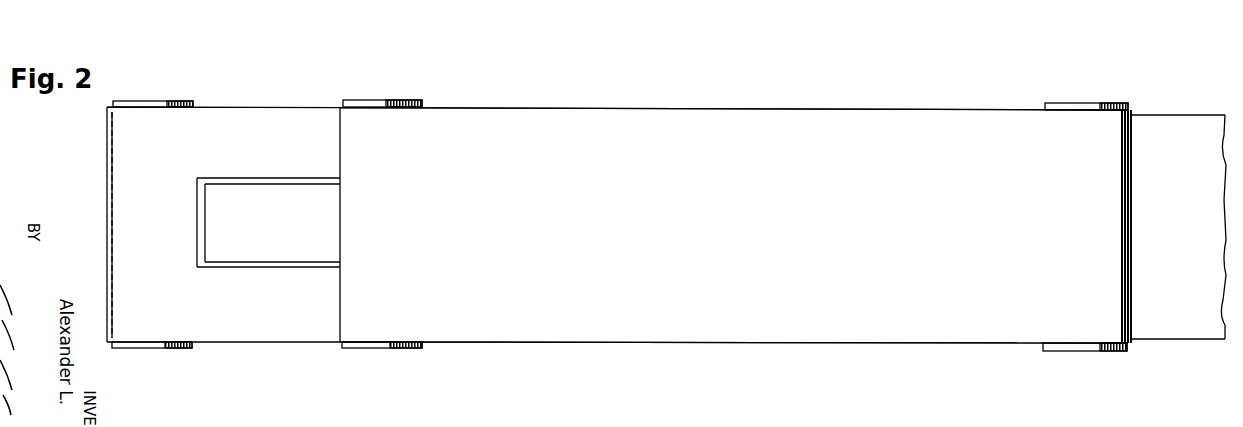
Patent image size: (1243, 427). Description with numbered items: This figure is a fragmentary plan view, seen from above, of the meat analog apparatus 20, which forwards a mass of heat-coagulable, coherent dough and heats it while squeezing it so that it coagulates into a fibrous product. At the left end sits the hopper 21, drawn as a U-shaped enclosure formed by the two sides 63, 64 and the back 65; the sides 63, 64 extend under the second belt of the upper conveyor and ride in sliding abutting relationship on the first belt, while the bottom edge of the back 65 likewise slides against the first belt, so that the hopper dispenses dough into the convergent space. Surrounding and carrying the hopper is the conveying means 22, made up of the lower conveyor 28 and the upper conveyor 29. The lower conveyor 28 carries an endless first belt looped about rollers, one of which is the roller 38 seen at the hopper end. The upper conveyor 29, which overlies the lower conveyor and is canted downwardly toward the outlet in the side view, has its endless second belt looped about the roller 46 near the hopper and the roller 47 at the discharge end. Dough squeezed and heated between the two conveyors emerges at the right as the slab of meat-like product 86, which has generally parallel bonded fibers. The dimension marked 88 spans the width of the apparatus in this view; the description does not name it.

The meat analog apparatus 20 is at (507, 353).
The hopper 21 is at (214, 273).
The conveying means 22 is at (680, 353).
The lower conveyor 28 is at (306, 346).
The upper conveyor 29 is at (649, 131).
The roller 38 is at (160, 101).
The roller 46 is at (386, 101).
The roller 47 is at (1066, 103).
The side 63 is at (258, 268).
The side 64 is at (268, 178).
The back 65 is at (197, 235).
The slab of meat-like product 86 is at (1185, 210).
The height dimension 88 is at (132, 341).